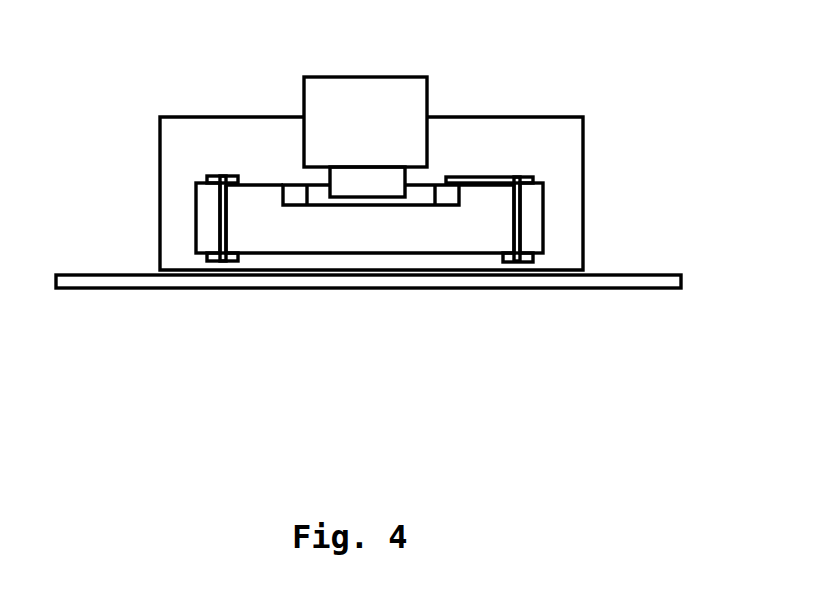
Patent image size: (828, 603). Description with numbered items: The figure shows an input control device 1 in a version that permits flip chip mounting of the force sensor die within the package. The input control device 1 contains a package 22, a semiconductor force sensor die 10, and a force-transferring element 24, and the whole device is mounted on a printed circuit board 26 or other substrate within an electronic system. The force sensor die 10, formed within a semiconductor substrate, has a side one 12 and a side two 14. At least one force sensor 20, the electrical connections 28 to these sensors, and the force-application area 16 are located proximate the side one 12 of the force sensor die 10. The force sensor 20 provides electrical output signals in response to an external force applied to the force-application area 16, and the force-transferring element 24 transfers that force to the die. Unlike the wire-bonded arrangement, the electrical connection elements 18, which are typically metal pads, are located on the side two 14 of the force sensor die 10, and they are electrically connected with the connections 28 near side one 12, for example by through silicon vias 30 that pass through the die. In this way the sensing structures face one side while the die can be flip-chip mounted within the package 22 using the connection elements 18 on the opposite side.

The input control device 1 is at (140, 40).
The force sensor die 10 is at (202, 215).
The side one 12 is at (257, 183).
The side two 14 is at (258, 253).
The force-application area 16 is at (388, 182).
The electrical connection elements 18 is at (514, 262).
The force sensor 20 is at (295, 196).
The package 22 is at (198, 116).
The force-transferring element 24 is at (363, 100).
The printed circuit board 26 is at (455, 290).
The electrical connections 28 is at (492, 175).
The through silicon vias 30 is at (522, 220).